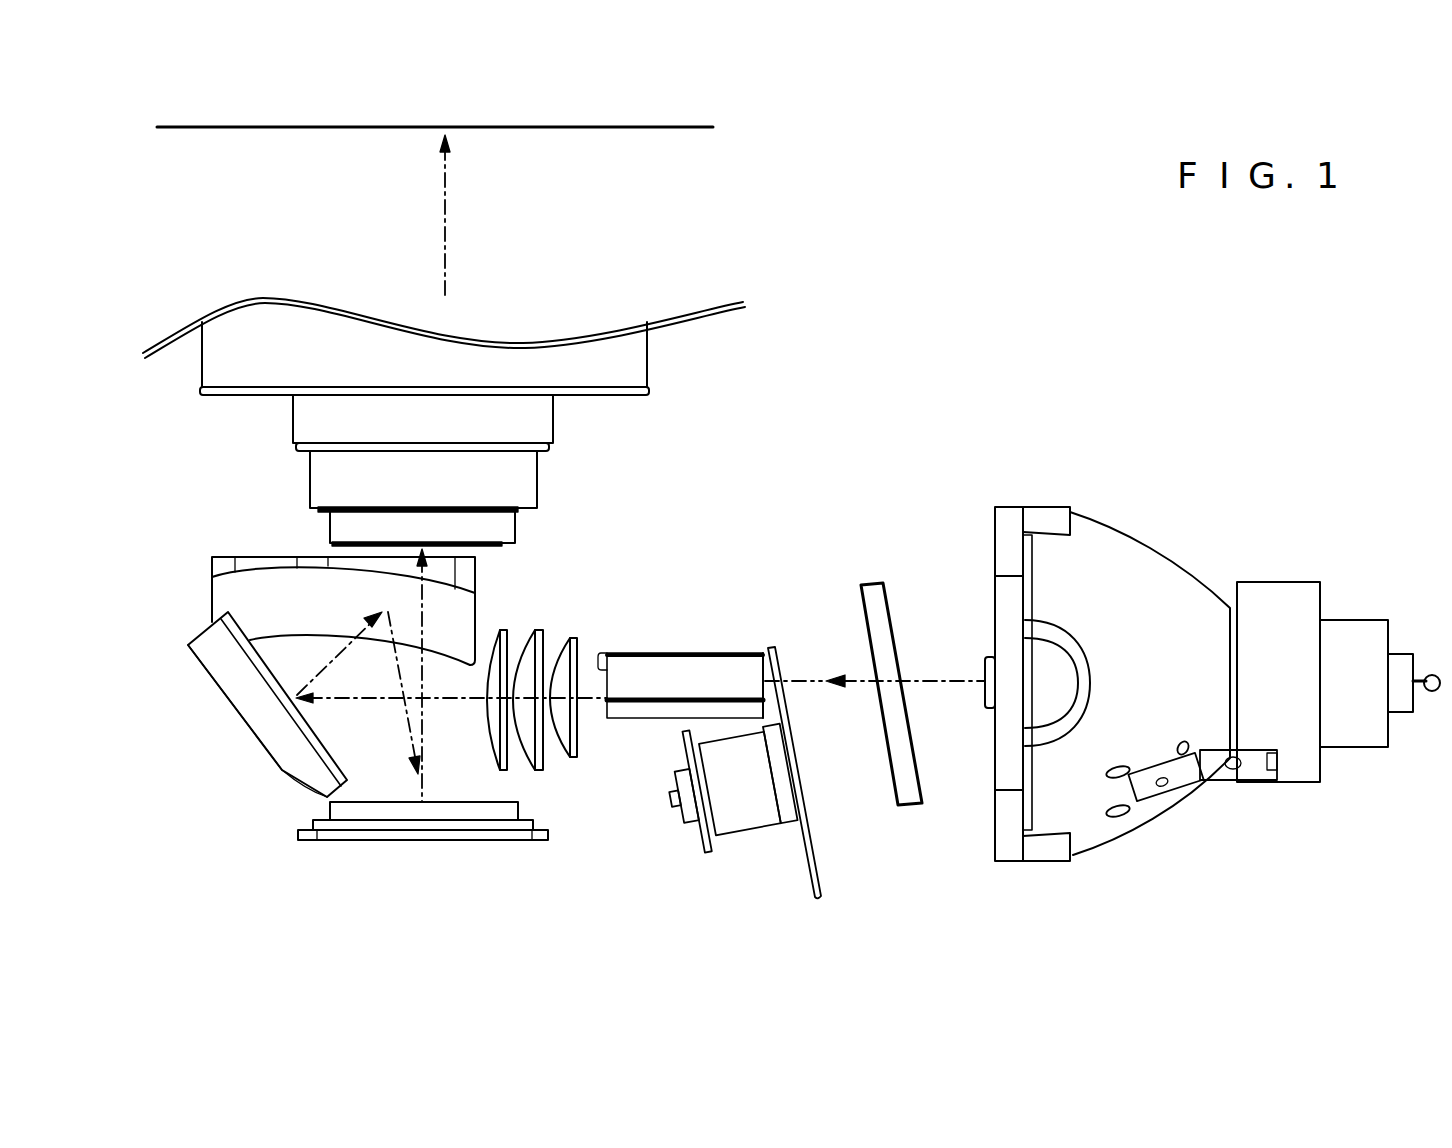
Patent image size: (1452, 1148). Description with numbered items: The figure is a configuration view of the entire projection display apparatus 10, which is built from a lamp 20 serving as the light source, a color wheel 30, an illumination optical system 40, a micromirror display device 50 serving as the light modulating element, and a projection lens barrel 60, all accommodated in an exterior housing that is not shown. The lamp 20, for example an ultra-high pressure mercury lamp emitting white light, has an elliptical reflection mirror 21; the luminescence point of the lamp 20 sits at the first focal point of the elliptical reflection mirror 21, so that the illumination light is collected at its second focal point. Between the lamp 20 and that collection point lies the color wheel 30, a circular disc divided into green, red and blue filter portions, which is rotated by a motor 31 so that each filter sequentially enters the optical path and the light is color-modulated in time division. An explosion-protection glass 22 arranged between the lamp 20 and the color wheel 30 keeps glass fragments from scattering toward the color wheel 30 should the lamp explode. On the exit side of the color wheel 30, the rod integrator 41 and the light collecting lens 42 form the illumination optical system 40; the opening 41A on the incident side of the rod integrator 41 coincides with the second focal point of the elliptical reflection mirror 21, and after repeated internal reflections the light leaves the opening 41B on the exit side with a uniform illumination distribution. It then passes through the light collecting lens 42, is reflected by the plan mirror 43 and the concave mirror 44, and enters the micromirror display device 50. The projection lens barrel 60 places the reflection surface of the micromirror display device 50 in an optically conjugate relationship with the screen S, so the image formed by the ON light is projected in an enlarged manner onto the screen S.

The screen S is at (643, 127).
The projection display apparatus 10 is at (878, 368).
The lamp 20 is at (1212, 638).
The elliptical reflection mirror 21 is at (1135, 540).
The explosion-protection glass 22 is at (908, 797).
The color wheel 30 is at (818, 888).
The motor 31 is at (733, 817).
The illumination optical system 40 is at (603, 557).
The rod integrator 41 is at (687, 619).
The opening on the incident side 41A is at (766, 655).
The opening on the exit side 41B is at (602, 652).
The light collecting lens 42 is at (580, 620).
The plan mirror 43 is at (227, 673).
The concave mirror 44 is at (230, 593).
The micromirror display device 50 is at (300, 832).
The projection lens barrel 60 is at (550, 420).